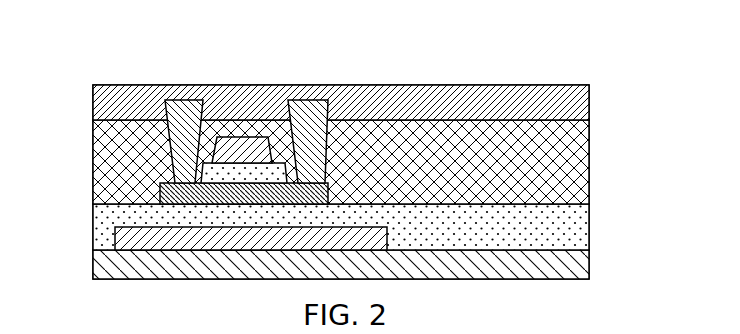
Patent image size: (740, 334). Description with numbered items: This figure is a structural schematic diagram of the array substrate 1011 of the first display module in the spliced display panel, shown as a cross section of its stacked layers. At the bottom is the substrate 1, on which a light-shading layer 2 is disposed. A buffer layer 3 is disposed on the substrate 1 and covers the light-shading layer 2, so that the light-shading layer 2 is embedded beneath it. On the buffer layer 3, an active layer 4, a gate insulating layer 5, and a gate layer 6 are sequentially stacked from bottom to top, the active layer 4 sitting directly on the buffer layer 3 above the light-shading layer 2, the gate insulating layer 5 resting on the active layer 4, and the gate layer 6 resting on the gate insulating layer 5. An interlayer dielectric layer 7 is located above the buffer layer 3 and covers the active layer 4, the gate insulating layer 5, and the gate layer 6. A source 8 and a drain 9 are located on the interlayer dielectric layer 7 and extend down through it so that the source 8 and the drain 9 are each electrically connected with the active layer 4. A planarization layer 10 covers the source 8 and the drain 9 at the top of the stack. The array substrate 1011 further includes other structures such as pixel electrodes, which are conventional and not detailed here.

The array substrate 1011 is at (88, 50).
The substrate 1 is at (577, 268).
The light-shading layer 2 is at (130, 238).
The buffer layer 3 is at (577, 232).
The active layer 4 is at (160, 197).
The gate insulating layer 5 is at (256, 167).
The gate layer 6 is at (221, 137).
The interlayer dielectric layer 7 is at (577, 170).
The source 8 is at (193, 100).
The drain 9 is at (313, 100).
The planarization layer 10 is at (589, 103).